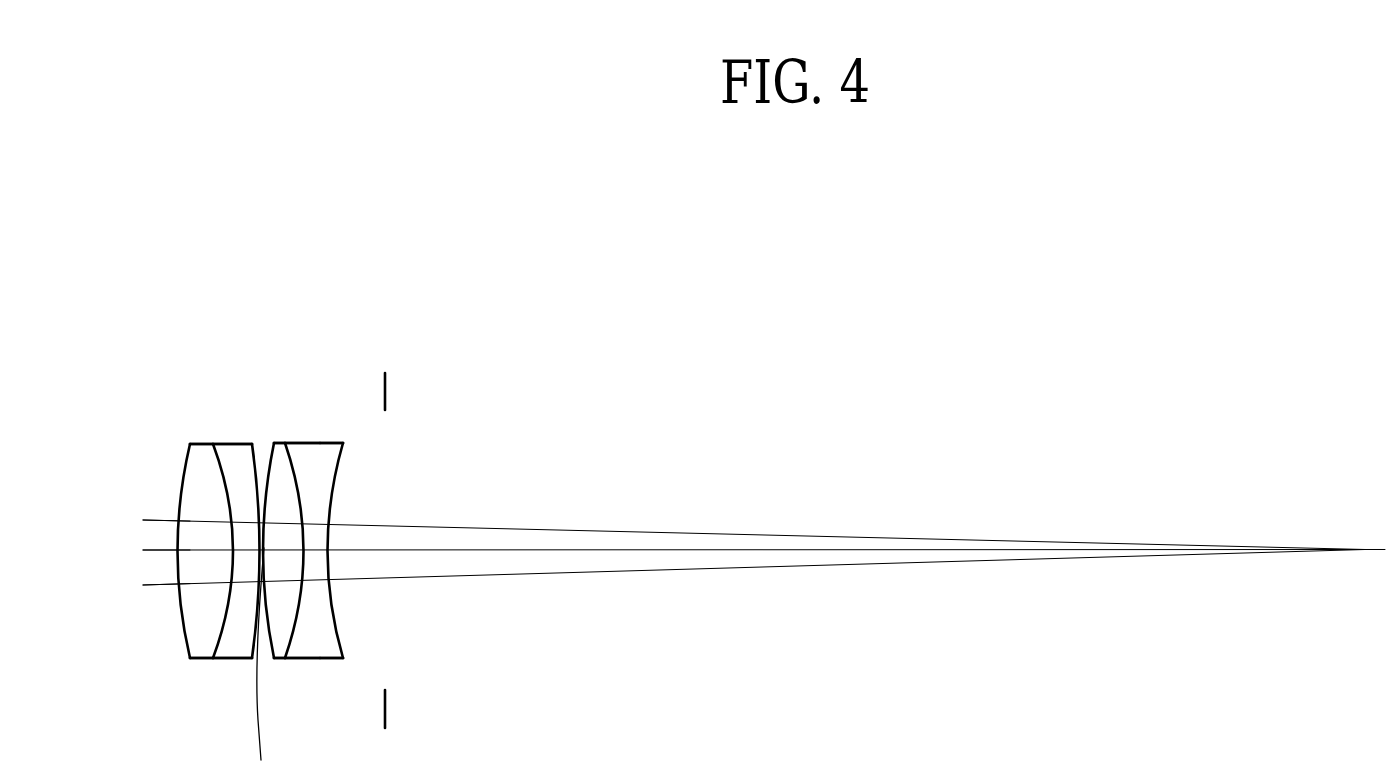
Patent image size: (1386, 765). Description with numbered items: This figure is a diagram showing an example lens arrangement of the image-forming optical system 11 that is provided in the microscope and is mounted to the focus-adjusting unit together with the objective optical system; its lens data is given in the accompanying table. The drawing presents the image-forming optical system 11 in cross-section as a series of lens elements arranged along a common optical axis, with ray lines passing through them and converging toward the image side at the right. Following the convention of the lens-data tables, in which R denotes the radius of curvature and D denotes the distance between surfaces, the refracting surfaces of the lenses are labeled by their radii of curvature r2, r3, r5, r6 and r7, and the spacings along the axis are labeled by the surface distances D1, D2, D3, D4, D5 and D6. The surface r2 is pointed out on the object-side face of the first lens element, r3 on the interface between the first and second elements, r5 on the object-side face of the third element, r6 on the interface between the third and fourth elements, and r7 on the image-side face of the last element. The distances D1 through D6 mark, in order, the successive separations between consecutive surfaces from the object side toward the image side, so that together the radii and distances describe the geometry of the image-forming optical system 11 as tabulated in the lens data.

The image-forming optical system 11 is at (474, 496).
The distance from stop to first lens surface D1 is at (139, 529).
The thickness of first lens D2 is at (179, 538).
The thickness of second lens D3 is at (233, 520).
The air gap between second and third lens D4 is at (294, 601).
The thickness of third lens D5 is at (317, 584).
The thickness of fourth lens D6 is at (359, 550).
The object-side surface of first lens r2 is at (143, 565).
The cemented surface of first and second lens r3 is at (215, 600).
The object-side surface of third lens r5 is at (273, 498).
The cemented surface of third and fourth lens r6 is at (308, 513).
The image-side surface of fourth lens r7 is at (377, 549).